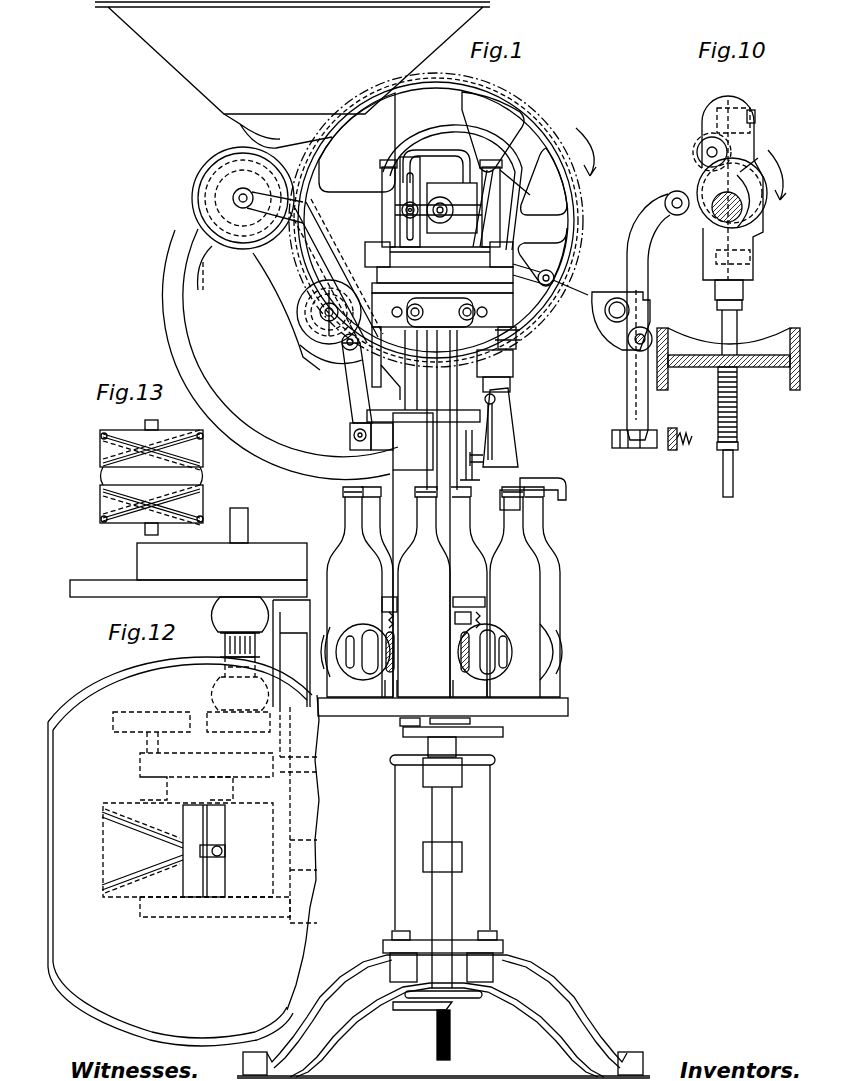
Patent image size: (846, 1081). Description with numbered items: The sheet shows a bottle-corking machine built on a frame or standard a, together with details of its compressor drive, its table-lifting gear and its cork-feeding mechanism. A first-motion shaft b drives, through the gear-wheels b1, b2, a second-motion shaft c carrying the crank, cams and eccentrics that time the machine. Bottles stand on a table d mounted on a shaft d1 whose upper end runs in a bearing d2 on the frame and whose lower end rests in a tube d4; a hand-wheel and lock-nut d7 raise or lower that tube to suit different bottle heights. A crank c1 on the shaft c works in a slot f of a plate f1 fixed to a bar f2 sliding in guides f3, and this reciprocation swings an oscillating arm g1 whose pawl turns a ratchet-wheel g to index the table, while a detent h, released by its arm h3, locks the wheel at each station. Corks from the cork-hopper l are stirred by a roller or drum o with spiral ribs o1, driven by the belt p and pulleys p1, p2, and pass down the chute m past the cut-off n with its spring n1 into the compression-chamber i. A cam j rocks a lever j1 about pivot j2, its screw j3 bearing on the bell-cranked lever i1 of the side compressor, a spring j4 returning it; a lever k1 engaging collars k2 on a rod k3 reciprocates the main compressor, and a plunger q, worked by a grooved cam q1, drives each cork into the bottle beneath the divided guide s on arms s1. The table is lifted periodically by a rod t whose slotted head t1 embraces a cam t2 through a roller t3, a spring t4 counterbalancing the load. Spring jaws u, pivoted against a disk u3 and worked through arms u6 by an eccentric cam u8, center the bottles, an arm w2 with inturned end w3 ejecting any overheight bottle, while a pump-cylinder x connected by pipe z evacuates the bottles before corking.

In FIG. 1, the frame or standard a is at (498, 380).
In FIG. 10, the frame or standard a is at (728, 350).
In FIG. 12, the frame or standard a is at (295, 761).
In FIG. 1, the first-motion shaft b is at (320, 316).
In FIG. 10, the first-motion shaft b is at (606, 322).
In FIG. 12, the first-motion shaft b is at (248, 530).
In FIG. 1, the gear-wheel b1 is at (318, 296).
In FIG. 12, the gear-wheel b1 is at (224, 644).
In FIG. 1, the gear-wheel b2 is at (586, 208).
In FIG. 1, the second-motion shaft c is at (454, 210).
In FIG. 10, the second-motion shaft c is at (745, 215).
In FIG. 1, the crank c1 is at (400, 207).
In FIG. 1, the table or platform d is at (568, 707).
In FIG. 1, the shaft d1 is at (425, 476).
In FIG. 1, the bearing d2 is at (442, 305).
In FIG. 1, the tube d4 is at (452, 828).
In FIG. 1, the hand-wheel and lock-nut d7 is at (468, 996).
In FIG. 1, the slot f is at (436, 170).
In FIG. 1, the plate f1 is at (392, 158).
In FIG. 1, the bar f2 is at (514, 250).
In FIG. 1, the guides f3 is at (566, 266).
In FIG. 1, the ratchet-wheel g is at (520, 292).
In FIG. 1, the oscillating arm g1 is at (516, 333).
In FIG. 1, the detent h is at (573, 291).
In FIG. 1, the arm h3 is at (524, 179).
In FIG. 1, the compression-chamber i is at (413, 441).
In FIG. 10, the bell-cranked lever i1 is at (672, 452).
In FIG. 10, the cam j is at (760, 166).
In FIG. 10, the lever j1 is at (640, 248).
In FIG. 10, the pivot j2 is at (628, 348).
In FIG. 10, the screw j3 is at (622, 450).
In FIG. 10, the spring j4 is at (694, 444).
In FIG. 1, the lever k1 is at (356, 388).
In FIG. 1, the collars k2 is at (358, 451).
In FIG. 1, the rod k3 is at (385, 451).
In FIG. 1, the cork-hopper l is at (292, 75).
In FIG. 12, the cork-hopper l is at (183, 851).
In FIG. 1, the chute m is at (348, 362).
In FIG. 1, the cut-off n is at (396, 368).
In FIG. 1, the spring n1 is at (215, 268).
In FIG. 1, the roller or drum o is at (195, 197).
In FIG. 12, the roller or drum o is at (200, 862).
In FIG. 13, the roller or drum o is at (200, 498).
In FIG. 1, the spiral ribs o1 is at (197, 224).
In FIG. 12, the spiral ribs o1 is at (124, 851).
In FIG. 13, the spiral ribs o1 is at (103, 440).
In FIG. 1, the belt p is at (275, 283).
In FIG. 12, the pulley p1 is at (158, 706).
In FIG. 1, the pulley p2 is at (320, 343).
In FIG. 12, the pulley p2 is at (212, 712).
In FIG. 1, the plunger q is at (457, 384).
In FIG. 1, the grooved cam q1 is at (490, 160).
In FIG. 1, the divided guide s is at (470, 463).
In FIG. 1, the arms s1 is at (495, 425).
In FIG. 10, the rod t is at (733, 480).
In FIG. 10, the slotted head t1 is at (716, 250).
In FIG. 10, the cam t2 is at (748, 257).
In FIG. 10, the roller t3 is at (697, 146).
In FIG. 10, the spring t4 is at (738, 410).
In FIG. 1, the spring jaws or clips u is at (342, 640).
In FIG. 1, the disk u3 is at (466, 597).
In FIG. 1, the arm or lever u6 is at (410, 730).
In FIG. 1, the eccentric cam u8 is at (503, 735).
In FIG. 1, the arm w2 is at (560, 505).
In FIG. 1, the outer end w3 is at (548, 478).
In FIG. 1, the pump-cylinder x is at (508, 452).
In FIG. 1, the pipe z is at (505, 430).